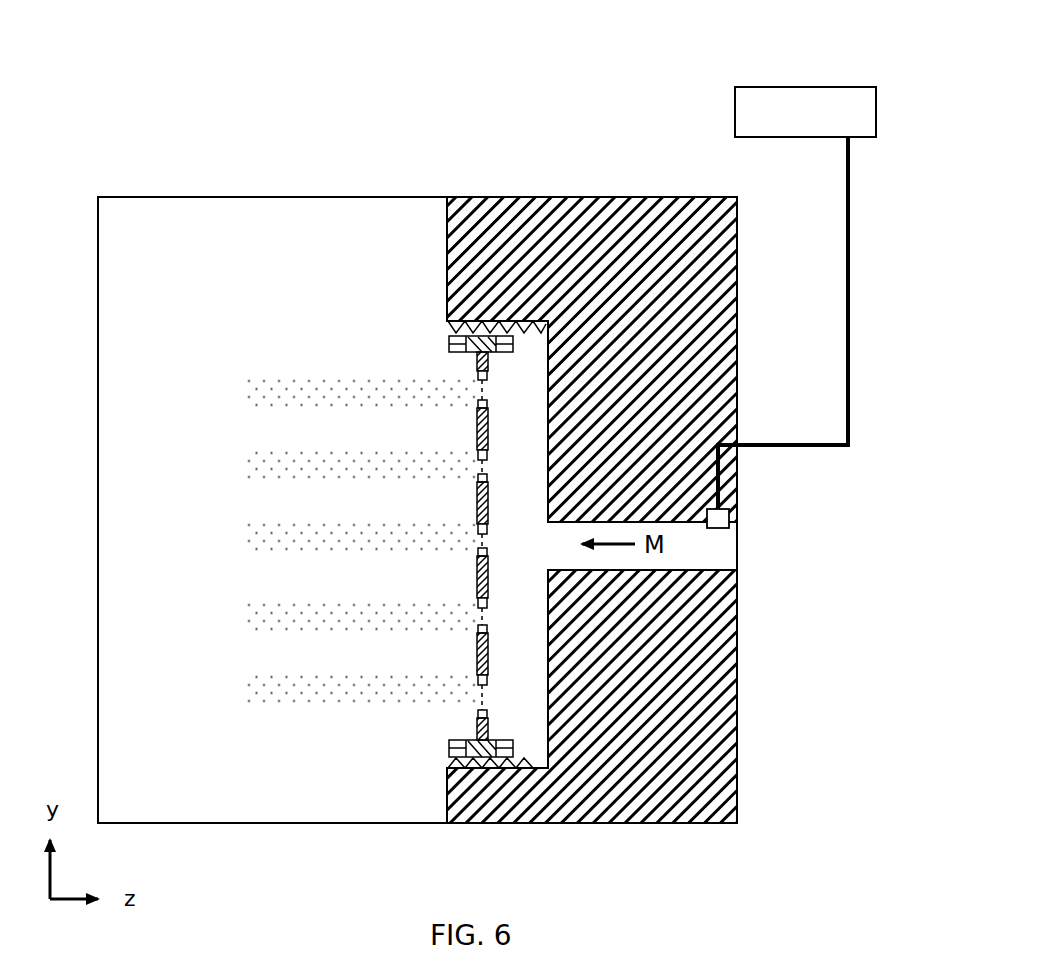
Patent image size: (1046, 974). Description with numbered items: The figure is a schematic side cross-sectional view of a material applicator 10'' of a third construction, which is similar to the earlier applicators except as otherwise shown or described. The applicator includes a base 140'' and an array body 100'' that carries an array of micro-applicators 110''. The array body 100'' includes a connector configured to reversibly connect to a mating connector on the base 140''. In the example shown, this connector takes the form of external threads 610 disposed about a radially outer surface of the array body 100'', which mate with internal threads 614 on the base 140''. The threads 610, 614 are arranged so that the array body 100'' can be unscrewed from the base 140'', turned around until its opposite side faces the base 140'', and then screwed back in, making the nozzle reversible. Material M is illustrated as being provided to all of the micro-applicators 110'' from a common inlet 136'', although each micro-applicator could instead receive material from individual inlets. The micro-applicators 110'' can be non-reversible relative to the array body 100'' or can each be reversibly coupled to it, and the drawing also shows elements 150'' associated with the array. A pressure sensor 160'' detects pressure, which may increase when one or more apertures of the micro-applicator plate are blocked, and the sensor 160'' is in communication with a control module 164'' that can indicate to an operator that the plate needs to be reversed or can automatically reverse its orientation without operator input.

The material applicator 10'' is at (417, 478).
The array body 100'' is at (367, 487).
The micro-applicators 110'' is at (376, 532).
The common inlet 136'' is at (523, 510).
The base 140'' is at (523, 457).
The emitter holders 150'' is at (367, 510).
The pressure sensor 160'' is at (791, 345).
The control module 164'' is at (781, 75).
The external threads 610 is at (540, 767).
The internal threads 614 is at (447, 762).